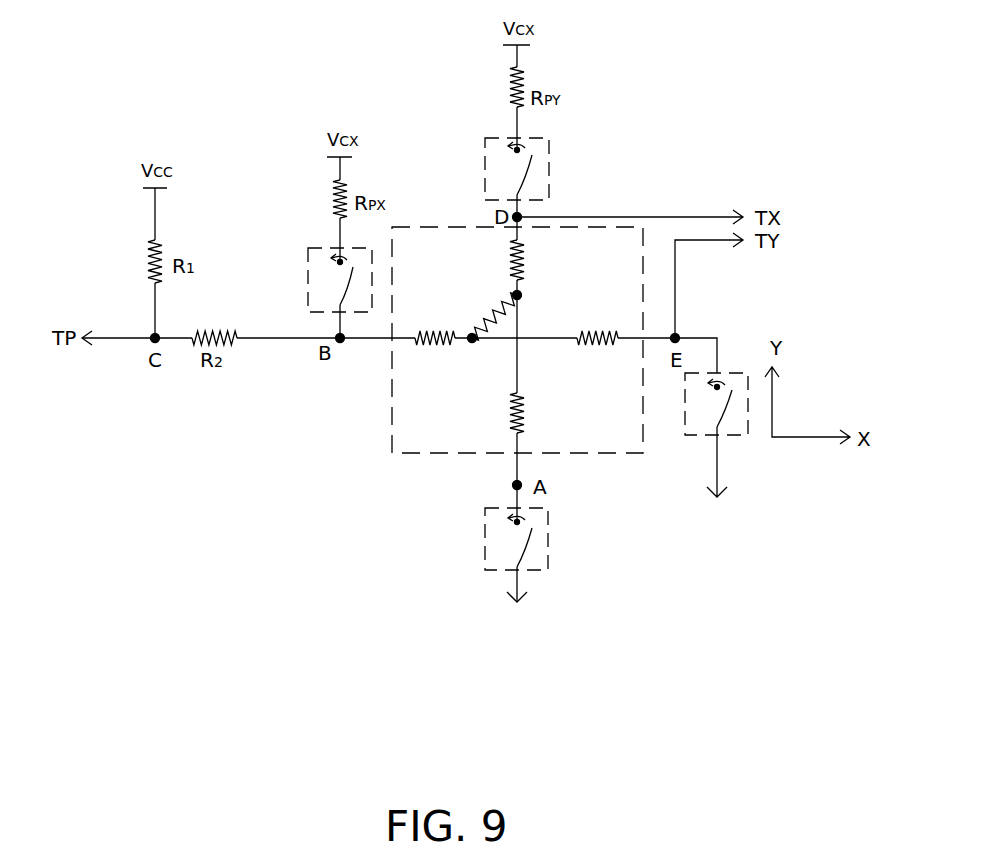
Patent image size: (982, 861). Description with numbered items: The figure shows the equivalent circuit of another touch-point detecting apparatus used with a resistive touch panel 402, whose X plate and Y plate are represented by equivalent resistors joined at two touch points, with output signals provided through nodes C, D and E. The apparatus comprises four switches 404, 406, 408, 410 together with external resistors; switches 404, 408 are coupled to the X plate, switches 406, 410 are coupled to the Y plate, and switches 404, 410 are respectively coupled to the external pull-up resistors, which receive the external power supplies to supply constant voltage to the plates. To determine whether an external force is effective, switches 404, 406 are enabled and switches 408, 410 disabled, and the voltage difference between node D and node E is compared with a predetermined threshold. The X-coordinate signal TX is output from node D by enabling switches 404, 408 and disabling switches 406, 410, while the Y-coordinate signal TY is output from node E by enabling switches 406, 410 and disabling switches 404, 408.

The resistive touch panel 402 is at (597, 227).
The switch 404 is at (308, 255).
The switch 406 is at (485, 516).
The switch 408 is at (685, 425).
The switch 410 is at (485, 149).